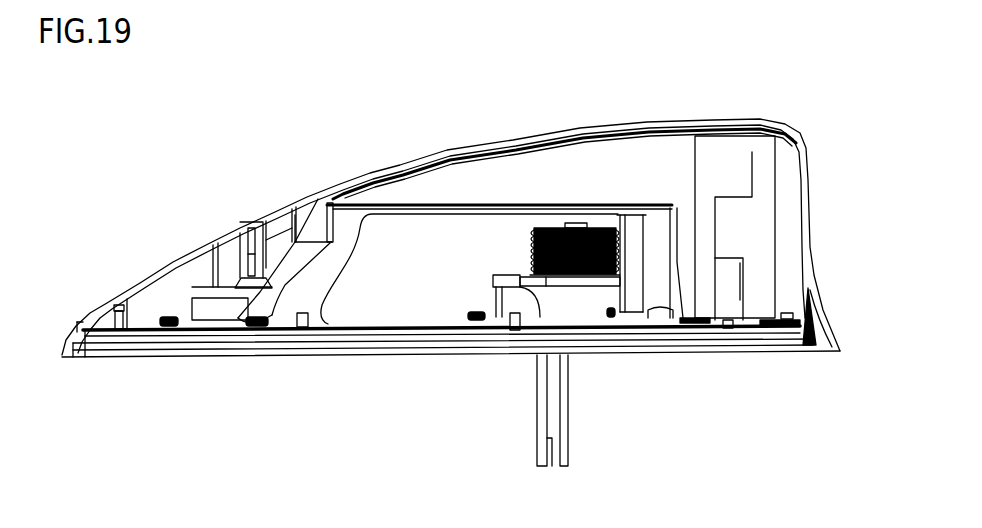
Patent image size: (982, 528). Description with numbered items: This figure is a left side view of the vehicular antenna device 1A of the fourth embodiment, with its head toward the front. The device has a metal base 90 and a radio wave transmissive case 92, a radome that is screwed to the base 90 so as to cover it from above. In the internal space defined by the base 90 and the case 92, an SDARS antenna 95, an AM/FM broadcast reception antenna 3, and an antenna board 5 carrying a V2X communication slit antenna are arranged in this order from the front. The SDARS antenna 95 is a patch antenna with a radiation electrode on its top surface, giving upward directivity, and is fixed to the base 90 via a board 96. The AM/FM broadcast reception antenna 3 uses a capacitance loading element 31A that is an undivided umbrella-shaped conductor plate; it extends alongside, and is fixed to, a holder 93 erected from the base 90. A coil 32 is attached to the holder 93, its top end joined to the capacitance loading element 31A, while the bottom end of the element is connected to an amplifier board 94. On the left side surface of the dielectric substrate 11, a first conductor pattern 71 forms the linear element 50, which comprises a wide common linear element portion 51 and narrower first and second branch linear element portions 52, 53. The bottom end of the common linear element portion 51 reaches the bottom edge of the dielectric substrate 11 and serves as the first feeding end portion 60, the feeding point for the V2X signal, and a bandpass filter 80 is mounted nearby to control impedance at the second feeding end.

The vehicular antenna device 1A is at (134, 506).
The AM/FM broadcast reception antenna 3 is at (520, 237).
The antenna board 5 is at (708, 130).
The dielectric substrate 11 is at (776, 176).
The capacitance loading element 31A is at (507, 163).
The coil 32 is at (632, 332).
The linear element 50 is at (697, 333).
The common linear element portion 51 is at (713, 287).
The first branch linear element portion 52 is at (753, 158).
The second branch linear element portion 53 is at (745, 283).
The first feeding end portion 60 is at (728, 331).
The first conductor pattern 71 is at (720, 225).
The bandpass filter 80 is at (794, 334).
The base 90 is at (457, 344).
The case 92 is at (307, 197).
The holder 93 is at (390, 214).
The amplifier board 94 is at (578, 331).
The SDARS antenna 95 is at (195, 308).
The board 96 is at (220, 334).